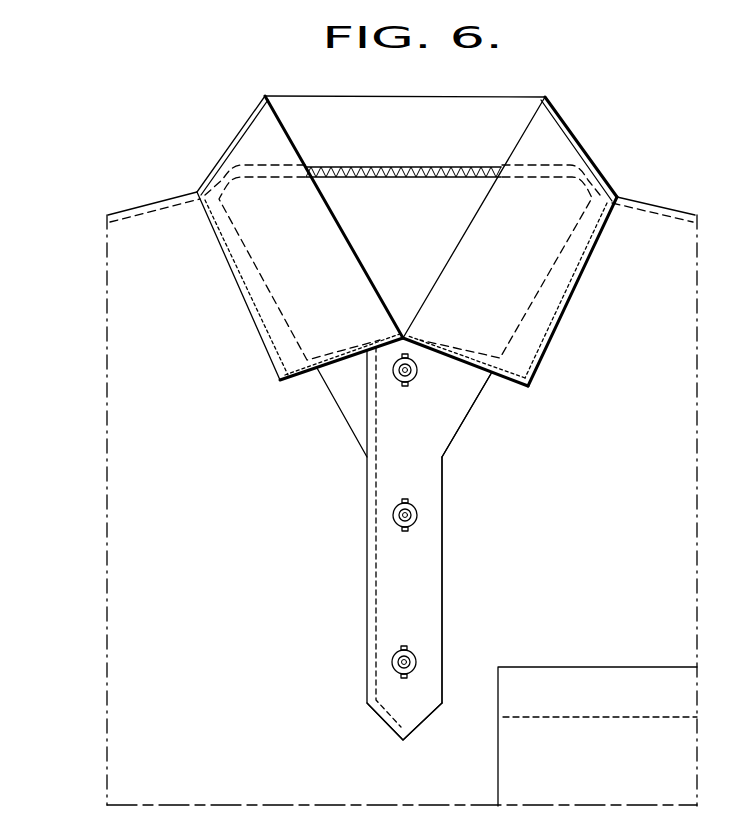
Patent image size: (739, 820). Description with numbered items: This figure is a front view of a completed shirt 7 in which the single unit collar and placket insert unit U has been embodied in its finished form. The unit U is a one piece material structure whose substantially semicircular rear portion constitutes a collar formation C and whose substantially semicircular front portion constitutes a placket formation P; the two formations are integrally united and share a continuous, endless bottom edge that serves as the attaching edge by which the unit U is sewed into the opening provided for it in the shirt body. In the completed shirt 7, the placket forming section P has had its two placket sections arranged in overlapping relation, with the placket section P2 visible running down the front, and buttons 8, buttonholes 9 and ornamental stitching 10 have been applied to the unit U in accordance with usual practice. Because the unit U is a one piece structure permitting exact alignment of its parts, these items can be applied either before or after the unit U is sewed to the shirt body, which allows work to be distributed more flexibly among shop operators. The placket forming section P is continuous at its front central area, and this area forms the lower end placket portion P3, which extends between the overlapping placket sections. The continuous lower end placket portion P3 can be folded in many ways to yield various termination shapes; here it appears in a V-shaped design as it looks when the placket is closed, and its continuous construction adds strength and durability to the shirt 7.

The shirt 7 is at (84, 683).
The buttons 8 is at (394, 372).
The buttonholes 9 is at (400, 386).
The ornamental stitching 10 is at (305, 358).
The collar formation C is at (592, 300).
The single unit collar and placket insert unit U is at (550, 387).
The placket formation P is at (532, 577).
The placket section P2 is at (420, 592).
The lower end placket portion P3 is at (361, 712).